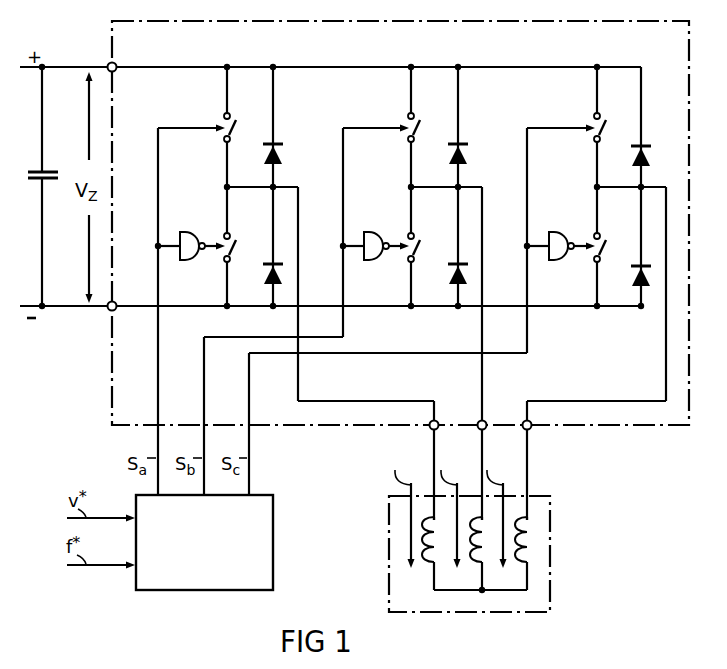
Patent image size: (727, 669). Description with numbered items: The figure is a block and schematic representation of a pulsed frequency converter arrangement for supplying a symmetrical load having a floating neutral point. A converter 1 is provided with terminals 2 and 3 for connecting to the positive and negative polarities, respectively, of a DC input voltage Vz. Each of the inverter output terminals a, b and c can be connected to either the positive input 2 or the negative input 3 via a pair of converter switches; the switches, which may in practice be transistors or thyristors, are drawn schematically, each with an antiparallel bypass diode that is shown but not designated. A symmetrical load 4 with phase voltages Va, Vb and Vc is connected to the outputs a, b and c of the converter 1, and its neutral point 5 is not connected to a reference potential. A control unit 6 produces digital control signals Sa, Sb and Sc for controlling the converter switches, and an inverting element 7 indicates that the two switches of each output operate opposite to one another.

The converter 1 is at (268, 20).
The positive input terminal 2 is at (110, 64).
The negative input terminal 3 is at (109, 311).
The symmetrical load 4 is at (551, 548).
The neutral point 5 is at (460, 592).
The control unit 6 is at (204, 542).
The inverting element 7 is at (192, 234).